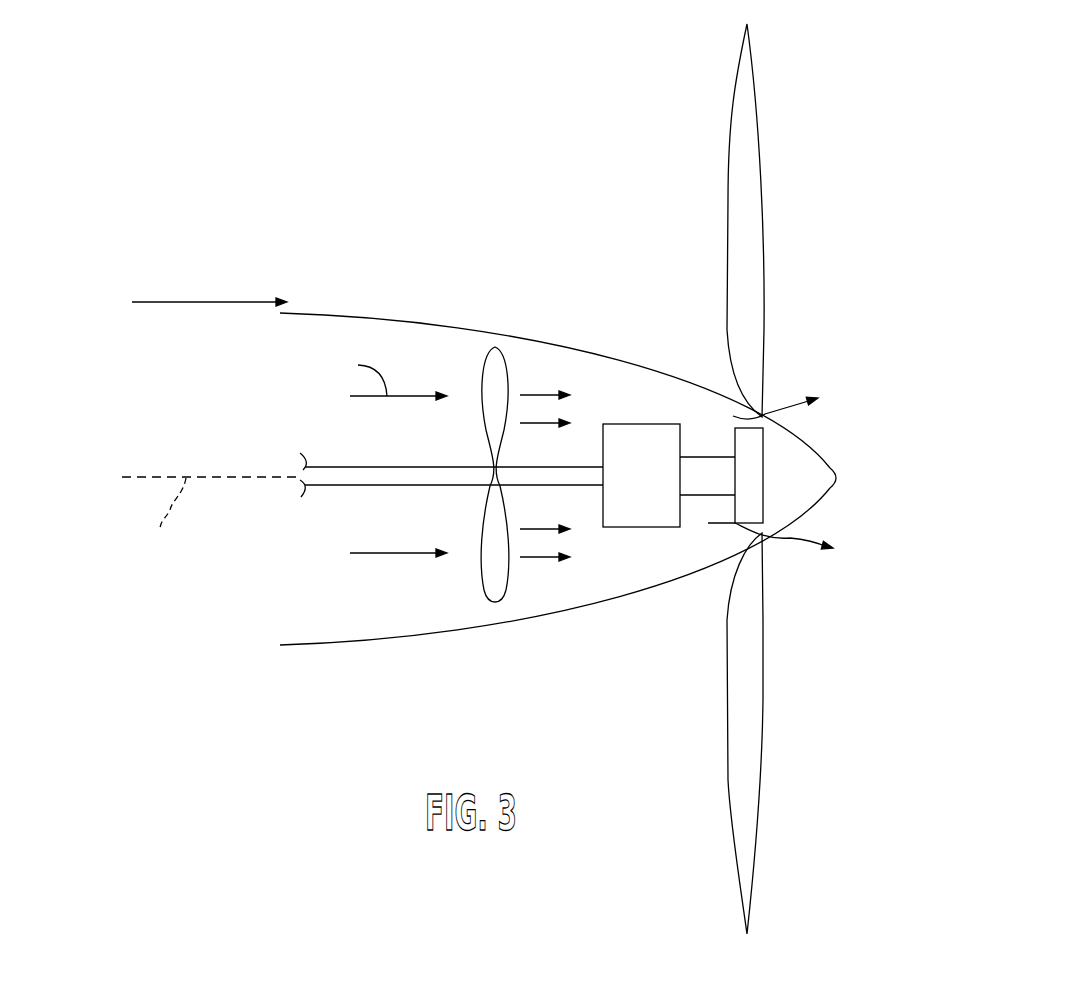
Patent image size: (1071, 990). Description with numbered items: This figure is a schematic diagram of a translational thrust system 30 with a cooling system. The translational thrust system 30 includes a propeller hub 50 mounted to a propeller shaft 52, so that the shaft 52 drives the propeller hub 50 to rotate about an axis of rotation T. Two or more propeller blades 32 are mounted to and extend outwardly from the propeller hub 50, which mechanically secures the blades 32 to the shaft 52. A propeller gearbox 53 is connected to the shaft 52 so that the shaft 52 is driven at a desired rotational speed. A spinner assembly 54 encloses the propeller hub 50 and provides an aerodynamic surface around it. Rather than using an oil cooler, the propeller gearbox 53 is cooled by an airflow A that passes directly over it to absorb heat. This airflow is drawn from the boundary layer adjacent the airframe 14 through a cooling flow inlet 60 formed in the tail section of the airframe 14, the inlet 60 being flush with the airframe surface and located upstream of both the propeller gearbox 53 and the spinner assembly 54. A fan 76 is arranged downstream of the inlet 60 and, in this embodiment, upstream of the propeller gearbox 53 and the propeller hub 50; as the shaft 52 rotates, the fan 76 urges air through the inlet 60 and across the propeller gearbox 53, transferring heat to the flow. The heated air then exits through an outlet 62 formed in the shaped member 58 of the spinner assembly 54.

The translational thrust system 30 is at (288, 183).
The airframe 14 is at (500, 328).
The shaped member 58 is at (822, 452).
The cooling flow inlet 60 is at (318, 327).
The spinner assembly 54 is at (600, 292).
The fan 76 is at (494, 595).
The propeller gearbox 53 is at (656, 491).
The propeller shaft 52 is at (708, 480).
The propeller hub 50 is at (750, 478).
The outlet 62 is at (768, 530).
The propeller blades 32 is at (761, 183).